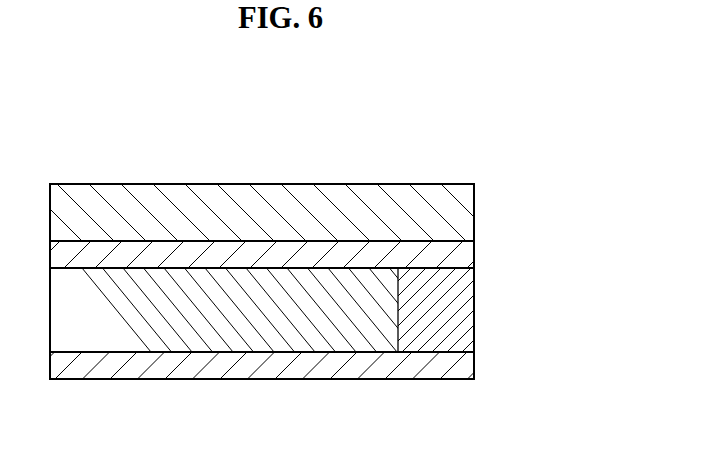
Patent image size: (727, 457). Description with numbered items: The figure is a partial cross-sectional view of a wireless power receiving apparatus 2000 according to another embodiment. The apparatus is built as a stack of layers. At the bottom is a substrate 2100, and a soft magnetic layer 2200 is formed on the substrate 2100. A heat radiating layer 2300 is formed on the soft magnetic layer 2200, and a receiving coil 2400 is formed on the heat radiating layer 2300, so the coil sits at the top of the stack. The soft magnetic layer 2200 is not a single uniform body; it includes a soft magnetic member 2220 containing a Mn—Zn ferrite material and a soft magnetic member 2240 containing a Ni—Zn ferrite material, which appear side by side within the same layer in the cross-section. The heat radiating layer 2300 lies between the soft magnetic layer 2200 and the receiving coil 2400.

The wireless power receiving apparatus 2000 is at (425, 138).
The substrate 2100 is at (474, 367).
The soft magnetic layer 2200 is at (328, 310).
The soft magnetic member 2220 is at (380, 320).
The soft magnetic member 2240 is at (458, 292).
The heat radiating layer 2300 is at (474, 253).
The receiving coil 2400 is at (474, 205).